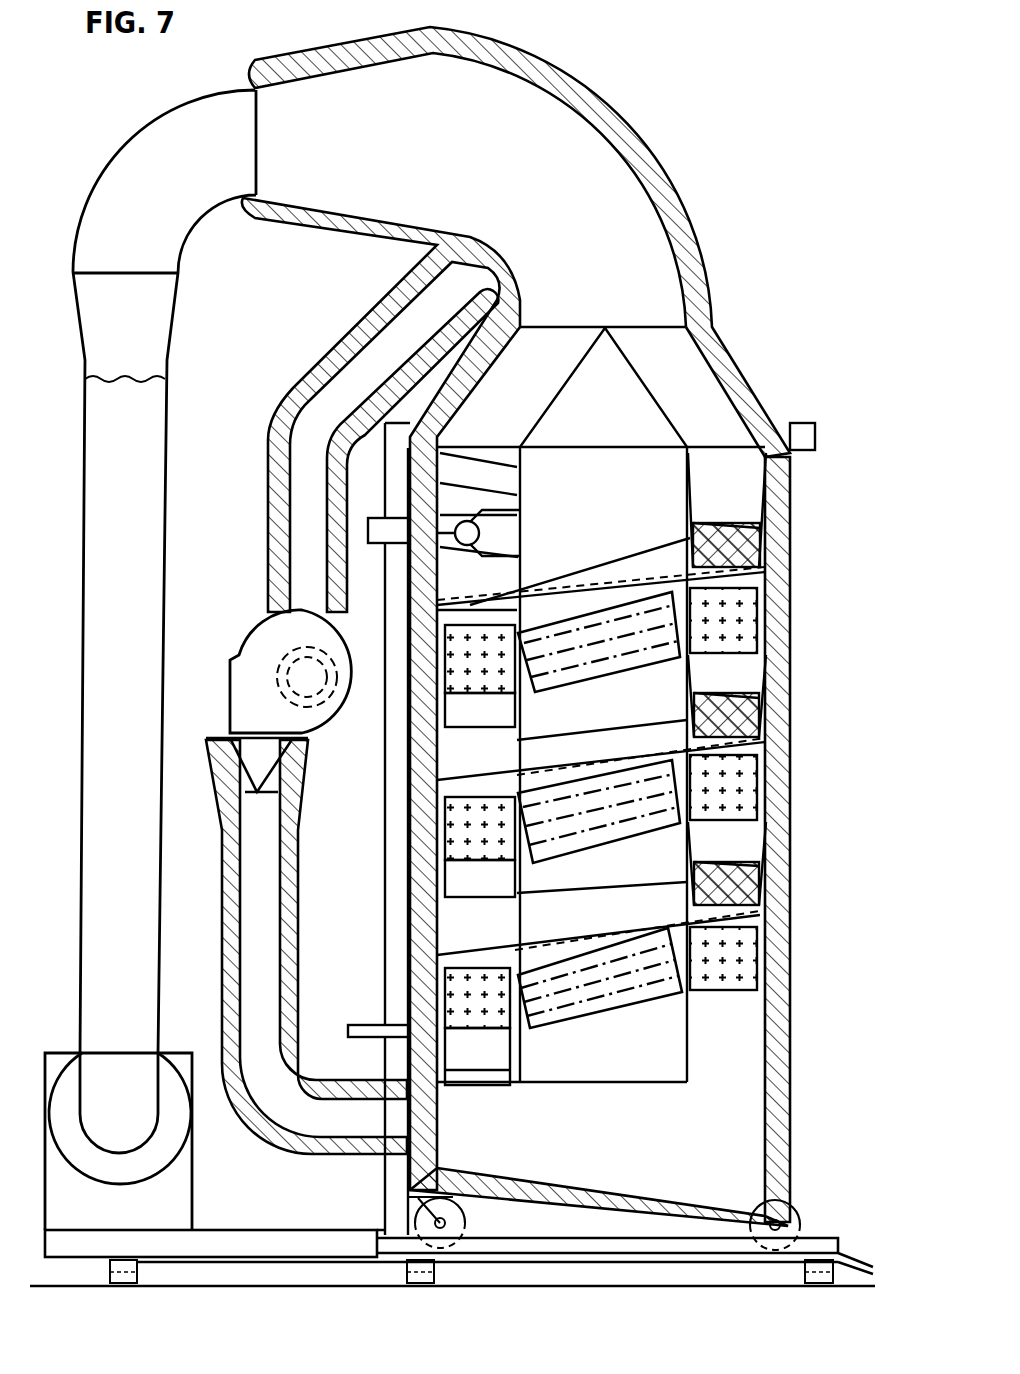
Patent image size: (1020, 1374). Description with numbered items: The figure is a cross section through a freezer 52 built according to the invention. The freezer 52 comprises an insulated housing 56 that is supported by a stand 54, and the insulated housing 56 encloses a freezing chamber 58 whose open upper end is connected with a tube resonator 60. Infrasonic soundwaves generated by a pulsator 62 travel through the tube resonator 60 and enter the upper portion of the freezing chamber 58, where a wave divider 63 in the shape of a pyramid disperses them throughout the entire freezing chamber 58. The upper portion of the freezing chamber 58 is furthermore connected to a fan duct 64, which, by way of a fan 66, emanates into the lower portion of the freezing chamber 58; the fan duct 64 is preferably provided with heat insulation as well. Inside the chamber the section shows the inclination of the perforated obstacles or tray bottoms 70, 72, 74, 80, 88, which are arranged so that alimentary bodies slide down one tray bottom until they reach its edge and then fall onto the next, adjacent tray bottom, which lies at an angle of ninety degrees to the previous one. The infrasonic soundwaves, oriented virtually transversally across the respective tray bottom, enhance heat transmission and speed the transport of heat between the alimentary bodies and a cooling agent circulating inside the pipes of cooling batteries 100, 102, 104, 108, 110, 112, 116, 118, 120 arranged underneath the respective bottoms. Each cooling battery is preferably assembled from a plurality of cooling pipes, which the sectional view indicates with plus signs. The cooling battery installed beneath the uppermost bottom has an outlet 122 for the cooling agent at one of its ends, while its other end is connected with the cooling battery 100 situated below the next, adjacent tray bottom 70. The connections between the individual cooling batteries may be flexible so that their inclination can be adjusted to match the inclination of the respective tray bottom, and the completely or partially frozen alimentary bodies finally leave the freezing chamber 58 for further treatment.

The freezer 52 is at (752, 390).
The stand 54 is at (392, 1190).
The insulated housing 56 is at (775, 700).
The freezing chamber 58 is at (725, 1081).
The tube resonator 60 is at (140, 456).
The pulsator 62 is at (170, 1176).
The wave divider 63 is at (625, 400).
The fan duct 64 is at (312, 427).
The fan 66 is at (250, 652).
The tray bottom 70 is at (722, 524).
The tray bottom 72 is at (638, 580).
The tray bottom 74 is at (485, 603).
The tray bottom 80 is at (630, 762).
The tray bottom 88 is at (633, 928).
The cooling battery 100 is at (745, 626).
The cooling battery 102 is at (596, 620).
The cooling battery 104 is at (478, 682).
The cooling battery 108 is at (745, 786).
The cooling battery 110 is at (582, 790).
The cooling battery 112 is at (450, 832).
The cooling battery 116 is at (745, 955).
The cooling battery 118 is at (575, 960).
The cooling battery 120 is at (473, 966).
The outlet for a cooling agent 122 is at (372, 544).